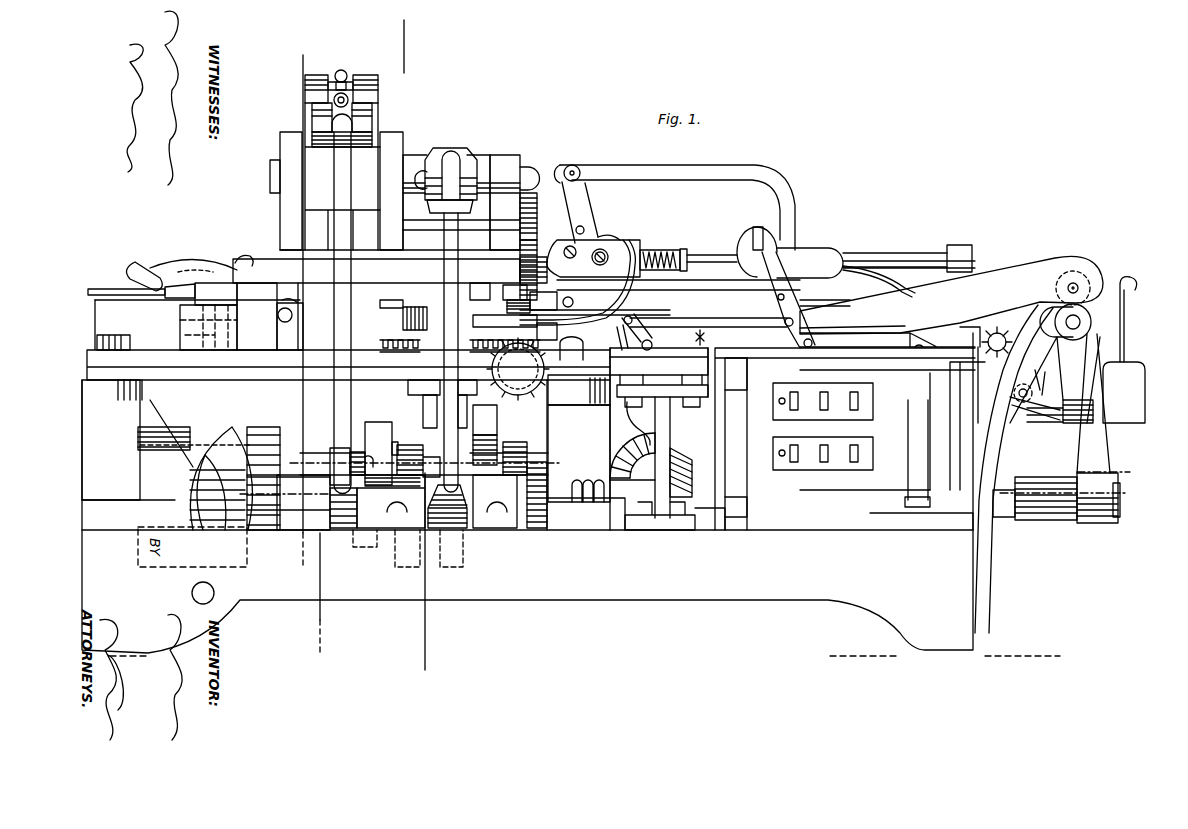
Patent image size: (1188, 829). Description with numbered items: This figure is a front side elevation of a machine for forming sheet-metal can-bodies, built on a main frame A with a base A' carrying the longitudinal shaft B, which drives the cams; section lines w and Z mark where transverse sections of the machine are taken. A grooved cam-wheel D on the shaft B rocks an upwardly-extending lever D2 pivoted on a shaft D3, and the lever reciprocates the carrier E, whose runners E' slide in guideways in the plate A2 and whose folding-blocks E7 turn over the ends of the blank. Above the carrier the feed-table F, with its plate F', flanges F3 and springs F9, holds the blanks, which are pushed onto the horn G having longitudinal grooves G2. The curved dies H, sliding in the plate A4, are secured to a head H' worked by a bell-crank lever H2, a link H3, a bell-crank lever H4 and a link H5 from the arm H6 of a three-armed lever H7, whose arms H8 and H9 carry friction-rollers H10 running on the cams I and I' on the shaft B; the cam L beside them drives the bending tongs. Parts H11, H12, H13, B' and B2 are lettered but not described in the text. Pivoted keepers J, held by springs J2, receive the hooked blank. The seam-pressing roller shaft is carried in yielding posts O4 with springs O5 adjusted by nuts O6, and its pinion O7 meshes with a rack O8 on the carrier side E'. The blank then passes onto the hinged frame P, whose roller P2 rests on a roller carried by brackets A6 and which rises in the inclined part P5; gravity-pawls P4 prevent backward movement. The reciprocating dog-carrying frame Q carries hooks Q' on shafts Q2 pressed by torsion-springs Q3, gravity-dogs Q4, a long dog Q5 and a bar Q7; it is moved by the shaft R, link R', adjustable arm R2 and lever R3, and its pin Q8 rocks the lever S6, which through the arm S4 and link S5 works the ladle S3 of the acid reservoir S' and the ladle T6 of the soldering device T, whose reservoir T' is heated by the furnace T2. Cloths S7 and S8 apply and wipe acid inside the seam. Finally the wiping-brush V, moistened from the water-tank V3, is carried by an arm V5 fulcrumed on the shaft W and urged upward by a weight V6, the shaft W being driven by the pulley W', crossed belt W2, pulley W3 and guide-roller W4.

The main frame A is at (128, 471).
The base A' is at (571, 494).
The plate A2 is at (348, 340).
The plate A4 is at (376, 304).
The brackets A6 is at (958, 247).
The section line w is at (308, 353).
The section line Z is at (409, 349).
The curved dies H is at (395, 288).
The head H' is at (381, 313).
The bell-crank lever H2 is at (352, 78).
The link H3 is at (350, 100).
The bell-crank lever H4 is at (354, 127).
The link H5 is at (406, 386).
The arm H6 is at (452, 148).
The three-armed lever H7 is at (458, 222).
The arm H8 is at (376, 422).
The arm H9 is at (355, 552).
The friction-roller H10 is at (497, 425).
The eccentric strap H11 is at (455, 560).
The eccentric H12 is at (490, 445).
The collar H13 is at (357, 450).
The yielding posts O4 is at (660, 286).
The spring O5 is at (533, 236).
The nut O6 is at (537, 200).
The pinion O7 is at (492, 369).
The rack O8 is at (460, 333).
The keepers J is at (480, 282).
The spring J2 is at (401, 318).
The horn G is at (547, 331).
The longitudinal grooves G2 is at (508, 299).
The carrier E is at (211, 316).
The runner E' is at (175, 342).
The folding-blocks E7 is at (276, 310).
The feed-table F is at (144, 262).
The plate F' is at (194, 277).
The flanges F3 is at (190, 258).
The springs F9 is at (226, 265).
The grooved cam-wheel D is at (236, 428).
The lever D2 is at (180, 424).
The shaft D3 is at (192, 593).
The longitudinal shaft B is at (631, 487).
The vertical shaft B' is at (675, 463).
The gear casing B2 is at (625, 440).
The cam I is at (349, 510).
The cam I' is at (321, 467).
The cam L is at (612, 441).
The reservoir S' is at (659, 439).
The ladle S3 is at (608, 362).
The arm S4 is at (640, 322).
The link S5 is at (722, 323).
The lever S6 is at (820, 305).
The piece of cloth S7 is at (616, 334).
The piece of cloth S8 is at (697, 336).
The soldering device T is at (850, 428).
The reservoir T' is at (887, 372).
The furnace T2 is at (807, 425).
The ladle T6 is at (781, 444).
The shaft R is at (895, 252).
The link R' is at (674, 201).
The arm R2 is at (577, 212).
The lever R3 is at (603, 222).
The dog-carrying frame Q is at (712, 244).
The hooks Q' is at (577, 288).
The shaft Q2 is at (612, 238).
The torsion-spring Q3 is at (668, 244).
The gravity-dogs Q4 is at (735, 283).
The long dog Q5 is at (860, 264).
The bar Q7 is at (976, 265).
The pin Q8 is at (758, 228).
The frame P is at (852, 314).
The roller P2 is at (1076, 283).
The gravity-pawls P4 is at (828, 297).
The inclined part P5 is at (951, 295).
The wiping-brush V is at (1007, 333).
The tank V3 is at (1033, 385).
The arm V5 is at (1108, 298).
The weight V6 is at (1130, 400).
The shaft W is at (1065, 322).
The pulley W' is at (1063, 469).
The crossed belt W2 is at (1103, 453).
The pulley W3 is at (1074, 494).
The friction-roller W4 is at (1075, 403).